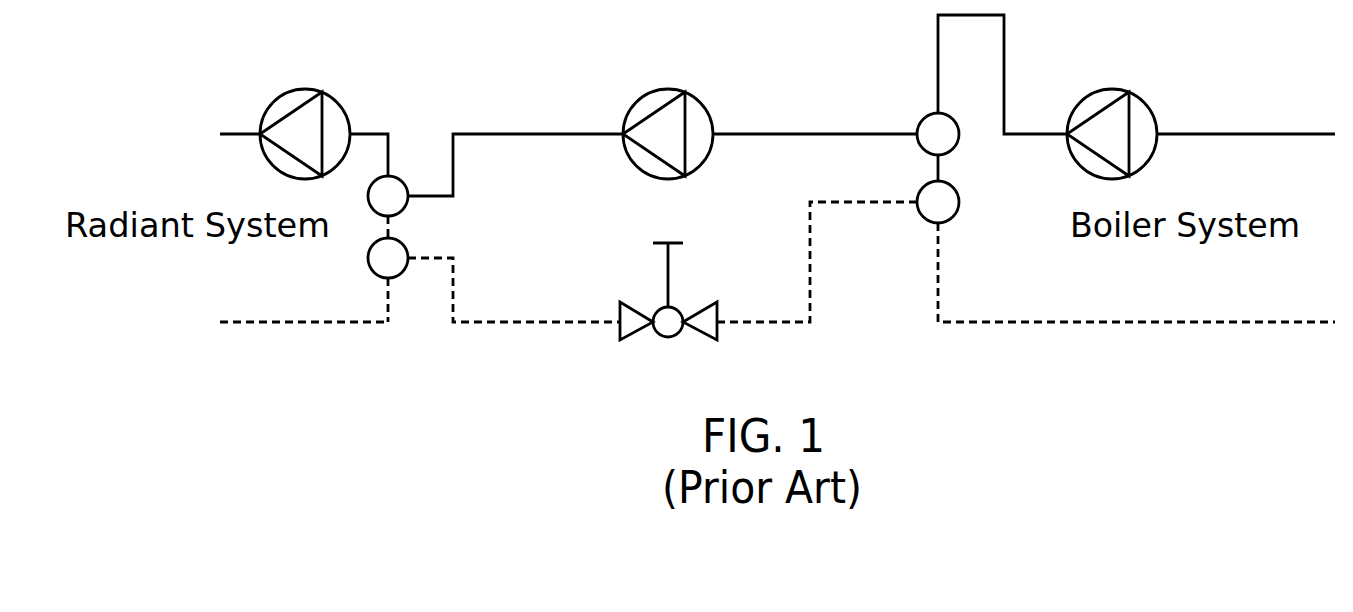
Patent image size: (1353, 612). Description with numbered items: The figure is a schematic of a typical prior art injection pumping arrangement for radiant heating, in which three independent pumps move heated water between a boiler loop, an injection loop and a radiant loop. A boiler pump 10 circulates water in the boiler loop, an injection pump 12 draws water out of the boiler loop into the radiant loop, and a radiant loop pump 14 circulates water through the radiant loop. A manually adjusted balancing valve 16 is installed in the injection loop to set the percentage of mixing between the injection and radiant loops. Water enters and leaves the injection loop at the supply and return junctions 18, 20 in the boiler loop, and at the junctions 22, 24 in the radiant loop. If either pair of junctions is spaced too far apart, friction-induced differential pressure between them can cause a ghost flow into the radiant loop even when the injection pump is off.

The boiler pump 10 is at (1113, 89).
The injection pump 12 is at (669, 89).
The radiant loop pump 14 is at (306, 89).
The balancing valve 16 is at (636, 302).
The supply junction 18 is at (960, 140).
The return junction 20 is at (960, 208).
The radiant loop junction 22 is at (405, 206).
The radiant loop junction 24 is at (400, 275).